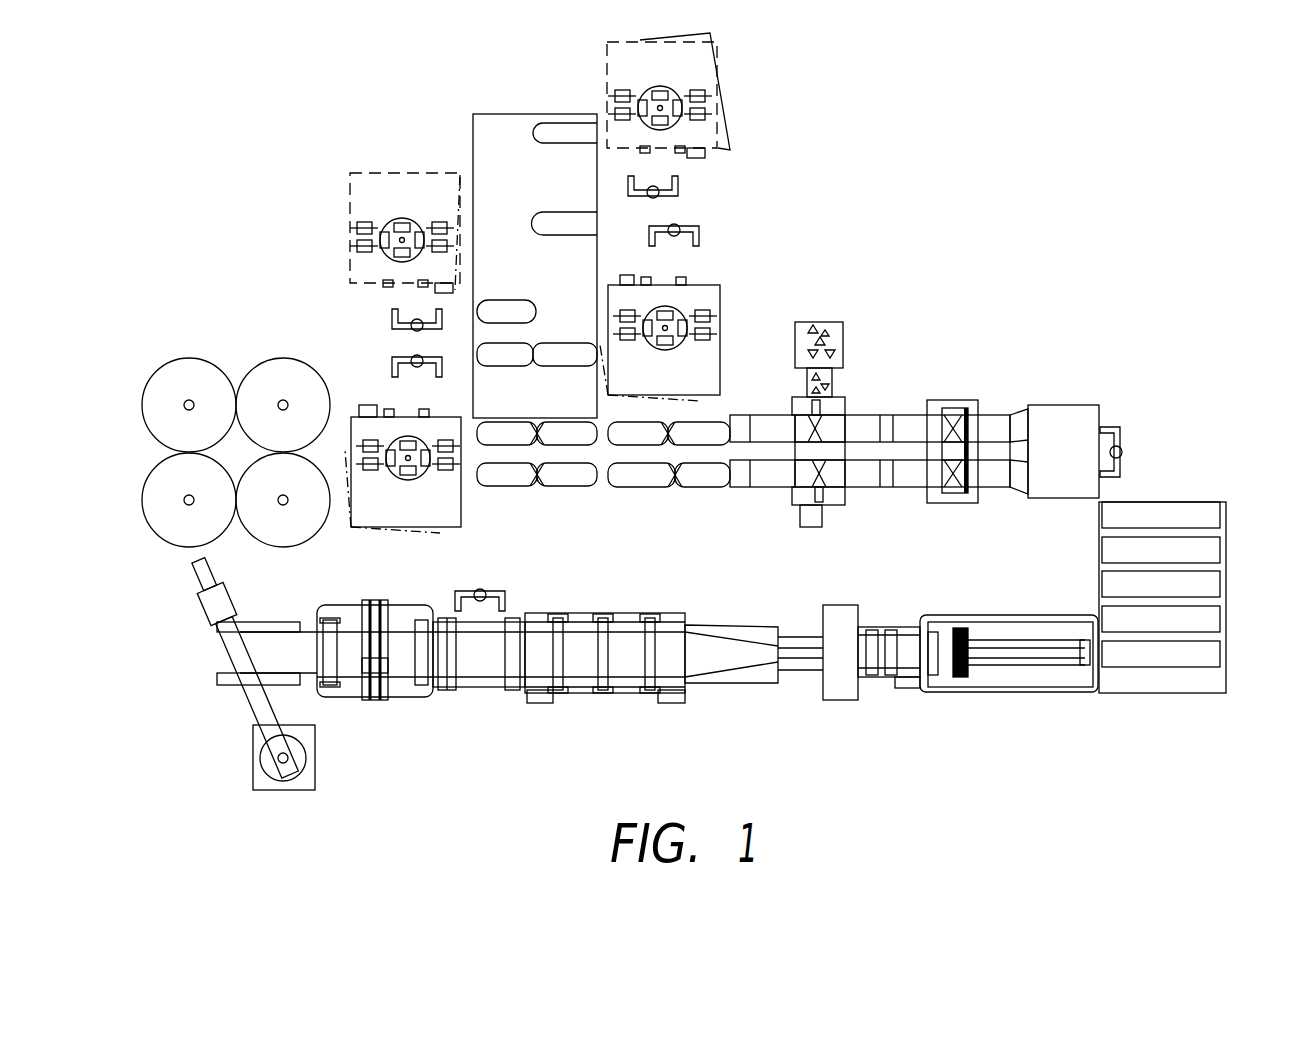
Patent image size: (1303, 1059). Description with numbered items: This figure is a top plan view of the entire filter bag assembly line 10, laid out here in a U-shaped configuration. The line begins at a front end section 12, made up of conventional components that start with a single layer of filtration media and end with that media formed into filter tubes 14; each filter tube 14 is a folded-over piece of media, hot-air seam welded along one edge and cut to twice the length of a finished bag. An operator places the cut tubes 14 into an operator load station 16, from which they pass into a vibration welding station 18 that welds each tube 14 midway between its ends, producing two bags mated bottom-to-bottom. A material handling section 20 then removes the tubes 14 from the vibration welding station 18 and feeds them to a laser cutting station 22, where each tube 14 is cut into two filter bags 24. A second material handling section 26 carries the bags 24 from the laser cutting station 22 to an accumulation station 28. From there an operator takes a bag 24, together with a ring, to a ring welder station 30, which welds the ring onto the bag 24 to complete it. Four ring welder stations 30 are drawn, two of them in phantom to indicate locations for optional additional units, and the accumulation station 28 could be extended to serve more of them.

The filter bag assembly line 10 is at (308, 183).
The front end section 12 is at (735, 708).
The filter tubes 14 is at (1215, 548).
The operator load station 16 is at (1105, 408).
The vibration welding station 18 is at (952, 400).
The material handling section 20 is at (883, 408).
The laser cutting station 22 is at (790, 398).
The filter bags 24 is at (627, 432).
The material handling section 26 is at (740, 412).
The accumulation station 28 is at (505, 490).
The ring welder station 30 is at (605, 100).